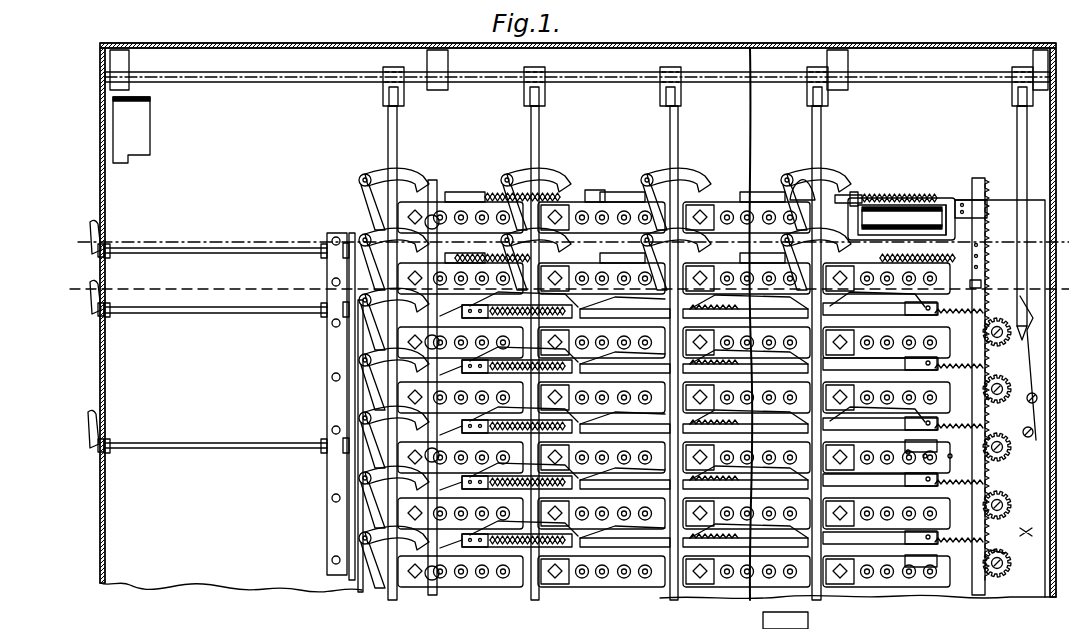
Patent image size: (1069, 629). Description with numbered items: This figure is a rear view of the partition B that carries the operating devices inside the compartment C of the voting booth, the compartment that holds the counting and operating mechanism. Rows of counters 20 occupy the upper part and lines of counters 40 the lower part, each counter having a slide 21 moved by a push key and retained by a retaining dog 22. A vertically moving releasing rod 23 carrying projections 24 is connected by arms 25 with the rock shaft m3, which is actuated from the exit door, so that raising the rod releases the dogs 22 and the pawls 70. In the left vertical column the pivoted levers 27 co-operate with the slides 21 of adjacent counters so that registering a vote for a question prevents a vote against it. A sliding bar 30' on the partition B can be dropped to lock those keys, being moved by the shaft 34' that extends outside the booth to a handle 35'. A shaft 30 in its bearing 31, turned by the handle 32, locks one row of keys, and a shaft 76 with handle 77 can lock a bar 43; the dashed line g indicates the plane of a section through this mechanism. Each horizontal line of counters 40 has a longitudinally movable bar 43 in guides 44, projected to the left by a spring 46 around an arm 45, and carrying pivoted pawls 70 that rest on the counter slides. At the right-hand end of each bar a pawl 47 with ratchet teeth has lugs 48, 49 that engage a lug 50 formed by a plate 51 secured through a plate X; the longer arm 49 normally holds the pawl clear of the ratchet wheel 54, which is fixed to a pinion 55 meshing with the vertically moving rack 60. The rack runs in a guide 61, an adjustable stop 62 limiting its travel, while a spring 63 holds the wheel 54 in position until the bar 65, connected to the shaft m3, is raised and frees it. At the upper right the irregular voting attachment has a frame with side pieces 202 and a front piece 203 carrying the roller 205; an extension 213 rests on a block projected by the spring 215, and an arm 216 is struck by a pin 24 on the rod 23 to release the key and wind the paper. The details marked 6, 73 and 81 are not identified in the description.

The partition B is at (578, 336).
The rock shaft m3 is at (577, 76).
The arms 25 is at (388, 94).
The releasing rod 23 is at (398, 141).
The box 6 is at (131, 130).
The bearing 31 is at (330, 295).
The shaft 30 is at (226, 247).
The sliding bar 30' is at (356, 458).
The shaft 76 is at (226, 307).
The shaft 34' is at (226, 441).
The compartment C is at (571, 243).
The section line g is at (567, 291).
The handle 32 is at (94, 226).
The handle 77 is at (88, 292).
The handle 35' is at (87, 426).
The counters 20 is at (676, 246).
The counters 40 is at (674, 460).
The front piece 203 is at (925, 198).
The roller 205 is at (902, 218).
The side pieces 202 is at (937, 226).
The spring 215 is at (895, 194).
The extension 213 is at (849, 193).
The arm 216 is at (808, 182).
The retaining dogs 22 is at (410, 180).
The projection 24 is at (540, 185).
The slide 21 is at (566, 195).
The pivoted levers 27 is at (438, 199).
The spring 46 is at (517, 448).
The arm 45 is at (455, 333).
The link 73 is at (456, 351).
The link 81 is at (417, 485).
The guides 44 is at (581, 312).
The pawl 70 is at (695, 443).
The movable bar 43 is at (694, 430).
The pawl 47 is at (950, 545).
The ratchet wheel 54 is at (1000, 346).
The pinion 55 is at (1010, 547).
The plate 51 is at (941, 578).
The lug 50 is at (920, 462).
The arm 49 is at (947, 460).
The arm 48 is at (909, 455).
The rack 60 is at (1013, 89).
The guide 61 is at (986, 201).
The adjustable stop 62 is at (981, 280).
The vertically movable bar 65 is at (1027, 262).
The spring 63 is at (1036, 352).
The plate X is at (1026, 529).